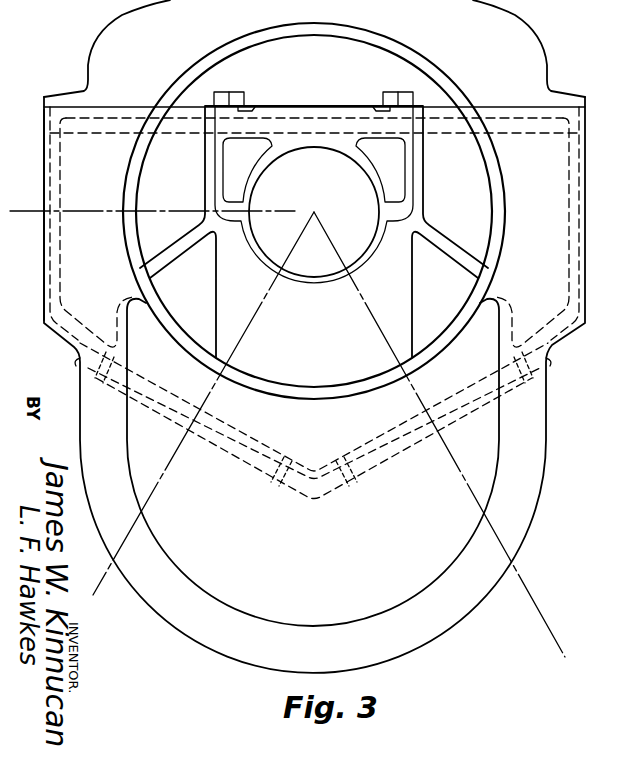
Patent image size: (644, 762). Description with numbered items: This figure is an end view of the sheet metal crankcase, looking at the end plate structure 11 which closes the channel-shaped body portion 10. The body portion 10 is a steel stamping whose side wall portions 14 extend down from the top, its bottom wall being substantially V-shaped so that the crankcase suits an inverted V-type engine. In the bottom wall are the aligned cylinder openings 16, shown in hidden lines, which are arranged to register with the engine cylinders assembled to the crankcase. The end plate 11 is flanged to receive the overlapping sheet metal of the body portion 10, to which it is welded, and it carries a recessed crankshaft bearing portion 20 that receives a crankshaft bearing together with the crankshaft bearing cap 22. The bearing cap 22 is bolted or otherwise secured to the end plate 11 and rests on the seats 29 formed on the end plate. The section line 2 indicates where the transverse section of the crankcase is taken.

The section line 2- 2 is at (20, 237).
The housing body 10 is at (586, 249).
The housing casing wall 11 is at (552, 191).
The side wall 14 is at (44, 176).
The flange band 16 is at (248, 459).
The wheel rim 20 is at (434, 341).
The bracket bolts 22 is at (280, 105).
The hub bracket plate 29 is at (404, 210).